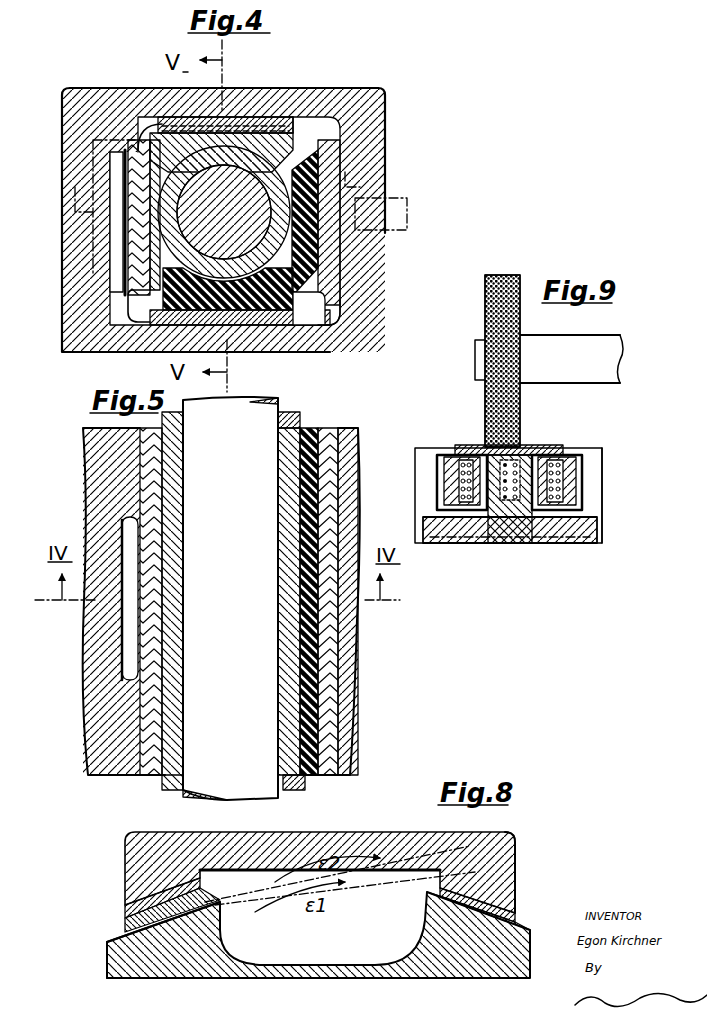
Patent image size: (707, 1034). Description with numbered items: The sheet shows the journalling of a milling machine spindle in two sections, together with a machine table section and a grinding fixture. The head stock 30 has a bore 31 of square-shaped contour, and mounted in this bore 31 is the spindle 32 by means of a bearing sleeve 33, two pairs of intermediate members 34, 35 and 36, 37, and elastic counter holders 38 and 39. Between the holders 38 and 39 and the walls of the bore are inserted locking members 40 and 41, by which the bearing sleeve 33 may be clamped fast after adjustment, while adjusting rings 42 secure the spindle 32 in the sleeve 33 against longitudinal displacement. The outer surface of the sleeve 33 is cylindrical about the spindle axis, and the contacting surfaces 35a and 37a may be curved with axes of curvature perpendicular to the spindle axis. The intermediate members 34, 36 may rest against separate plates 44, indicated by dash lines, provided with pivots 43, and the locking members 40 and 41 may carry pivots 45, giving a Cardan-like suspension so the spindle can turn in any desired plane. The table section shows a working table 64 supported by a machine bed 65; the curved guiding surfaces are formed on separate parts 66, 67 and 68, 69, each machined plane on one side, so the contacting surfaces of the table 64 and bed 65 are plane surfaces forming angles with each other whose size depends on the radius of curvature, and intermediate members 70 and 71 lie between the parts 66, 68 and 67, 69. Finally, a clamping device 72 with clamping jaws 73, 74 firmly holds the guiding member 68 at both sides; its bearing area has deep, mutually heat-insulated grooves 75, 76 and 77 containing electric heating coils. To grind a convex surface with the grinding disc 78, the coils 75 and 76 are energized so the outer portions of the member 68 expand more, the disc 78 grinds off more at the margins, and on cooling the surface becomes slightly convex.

In FIG. 4, the head stock 30 is at (88, 102).
In FIG. 5, the head stock 30 is at (100, 735).
In FIG. 4, the bore 31 is at (145, 97).
In FIG. 4, the spindle 32 is at (238, 300).
In FIG. 5, the spindle 32 is at (273, 700).
In FIG. 4, the bearing sleeve 33 is at (292, 222).
In FIG. 5, the bearing sleeve 33 is at (293, 752).
In FIG. 4, the intermediate member 34 is at (160, 275).
In FIG. 4, the intermediate member 35 is at (137, 297).
In FIG. 4, the contacting surface 35a is at (135, 246).
In FIG. 4, the intermediate member 36 is at (258, 117).
In FIG. 5, the intermediate member 36 is at (135, 773).
In FIG. 4, the intermediate member 37 is at (292, 117).
In FIG. 5, the intermediate member 37 is at (128, 778).
In FIG. 4, the contacting surface 37a is at (222, 116).
In FIG. 4, the elastic counter holder 38 is at (333, 227).
In FIG. 4, the elastic counter holder 39 is at (283, 300).
In FIG. 4, the locking member 40 is at (327, 280).
In FIG. 4, the locking member 41 is at (307, 310).
In FIG. 5, the adjusting ring 42 is at (300, 418).
In FIG. 4, the pivot 43 is at (75, 200).
In FIG. 4, the separate plate 44 is at (110, 165).
In FIG. 4, the pivot 45 is at (365, 175).
In FIG. 8, the working table 64 is at (407, 852).
In FIG. 8, the machine bed 65 is at (322, 960).
In FIG. 8, the separate part 66 is at (178, 890).
In FIG. 8, the separate part 67 is at (500, 893).
In FIG. 9, the guiding member 68 is at (540, 448).
In FIG. 8, the guiding member 68 is at (130, 950).
In FIG. 8, the separate part 69 is at (515, 918).
In FIG. 8, the intermediate member 70 is at (150, 907).
In FIG. 8, the intermediate member 71 is at (514, 852).
In FIG. 9, the clamping device 72 is at (500, 540).
In FIG. 9, the clamping jaw 73 is at (595, 498).
In FIG. 9, the clamping jaw 74 is at (428, 490).
In FIG. 9, the groove with heating coil 75 is at (462, 450).
In FIG. 9, the groove with heating coil 76 is at (528, 543).
In FIG. 9, the groove with heating coil 77 is at (580, 452).
In FIG. 9, the grinding disc 78 is at (490, 315).